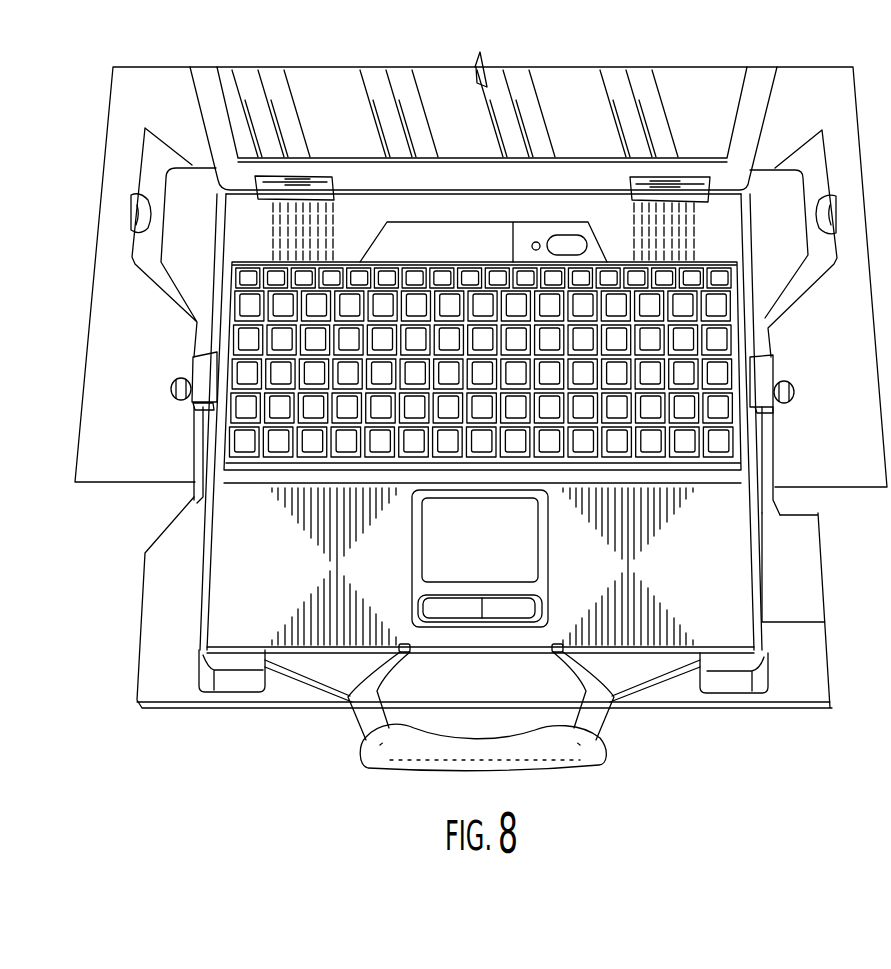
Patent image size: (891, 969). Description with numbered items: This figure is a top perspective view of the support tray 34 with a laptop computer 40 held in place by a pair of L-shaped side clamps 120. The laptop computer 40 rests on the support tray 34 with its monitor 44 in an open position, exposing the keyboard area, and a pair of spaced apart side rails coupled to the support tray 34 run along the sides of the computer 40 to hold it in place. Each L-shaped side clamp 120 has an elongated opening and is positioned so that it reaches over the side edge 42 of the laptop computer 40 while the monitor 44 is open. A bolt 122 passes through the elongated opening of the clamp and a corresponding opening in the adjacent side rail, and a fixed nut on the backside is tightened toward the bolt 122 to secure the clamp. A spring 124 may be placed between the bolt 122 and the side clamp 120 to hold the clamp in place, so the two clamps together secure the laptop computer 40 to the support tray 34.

The support tray 34 is at (162, 673).
The laptop computer 40 is at (715, 600).
The side edge 42 is at (226, 471).
The monitor 44 is at (217, 115).
The L-shaped side clamp 120 is at (195, 357).
The bolt 122 is at (172, 388).
The spring 124 is at (194, 417).